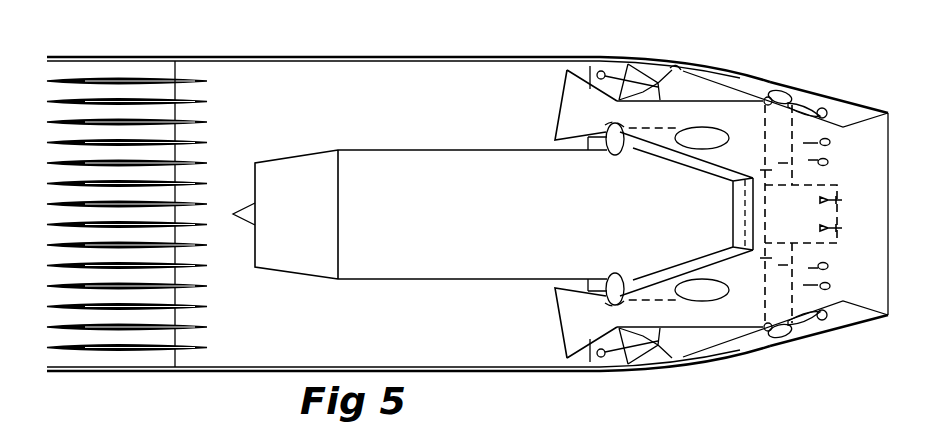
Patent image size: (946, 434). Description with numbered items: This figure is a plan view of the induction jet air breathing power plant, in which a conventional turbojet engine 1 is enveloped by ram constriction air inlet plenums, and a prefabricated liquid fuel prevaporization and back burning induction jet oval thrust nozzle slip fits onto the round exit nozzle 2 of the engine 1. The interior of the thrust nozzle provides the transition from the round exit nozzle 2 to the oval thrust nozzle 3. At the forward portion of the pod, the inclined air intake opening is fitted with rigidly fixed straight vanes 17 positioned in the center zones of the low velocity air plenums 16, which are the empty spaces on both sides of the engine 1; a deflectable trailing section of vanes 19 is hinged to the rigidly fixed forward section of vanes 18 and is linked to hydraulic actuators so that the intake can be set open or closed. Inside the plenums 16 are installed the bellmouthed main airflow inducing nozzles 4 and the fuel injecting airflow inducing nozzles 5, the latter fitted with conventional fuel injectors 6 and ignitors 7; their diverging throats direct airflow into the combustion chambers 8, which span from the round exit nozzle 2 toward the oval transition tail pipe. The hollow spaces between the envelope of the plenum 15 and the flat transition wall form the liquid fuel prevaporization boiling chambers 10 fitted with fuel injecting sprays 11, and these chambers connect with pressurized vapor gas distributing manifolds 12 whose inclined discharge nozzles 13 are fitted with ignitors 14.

The engine 1 is at (428, 214).
The round engine exit nozzle 2 is at (733, 219).
The oval thrust nozzle 3 is at (892, 157).
The main airflow inducing nozzles 4 is at (575, 70).
The fuel injecting airflow inducing nozzles 5 is at (620, 100).
The fuel injectors 6 is at (662, 97).
The ignitors 7 is at (673, 72).
The combustion chambers 8 is at (738, 127).
The liquid fuel prevaporization chambers 10 is at (840, 185).
The fuel injecting sprays 11 is at (850, 222).
The pressurized vapor gas distributing manifolds 12 is at (780, 92).
The discharge nozzles 13 is at (797, 110).
The ignitors 14 is at (825, 107).
The plenum envelope 15 is at (858, 103).
The low velocity air plenums 16 is at (408, 214).
The rigidly fixed straight vanes 17 is at (52, 123).
The rigidly fixed forward section of vanes 18 is at (50, 80).
The deflectable trailing section of vanes 19 is at (83, 80).